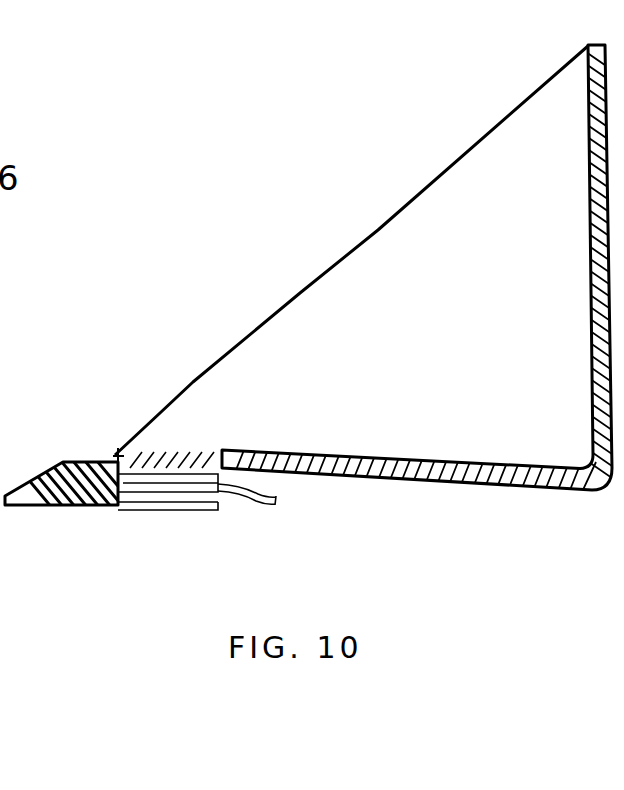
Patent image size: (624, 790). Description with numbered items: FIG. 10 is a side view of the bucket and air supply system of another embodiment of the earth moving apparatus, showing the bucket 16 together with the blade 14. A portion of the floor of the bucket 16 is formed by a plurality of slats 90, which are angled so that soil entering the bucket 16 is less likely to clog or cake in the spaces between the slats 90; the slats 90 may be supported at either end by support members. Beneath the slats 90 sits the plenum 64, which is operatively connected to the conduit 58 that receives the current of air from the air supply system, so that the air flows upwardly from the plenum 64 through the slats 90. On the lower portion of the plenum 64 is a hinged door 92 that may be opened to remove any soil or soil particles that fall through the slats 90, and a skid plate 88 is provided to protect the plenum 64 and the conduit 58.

The blade 14 is at (53, 507).
The bucket 16 is at (523, 463).
The conduit 58 is at (273, 496).
The plenum 64 is at (128, 508).
The skid plate 88 is at (185, 511).
The slats 90 is at (192, 452).
The hinged door 92 is at (224, 493).